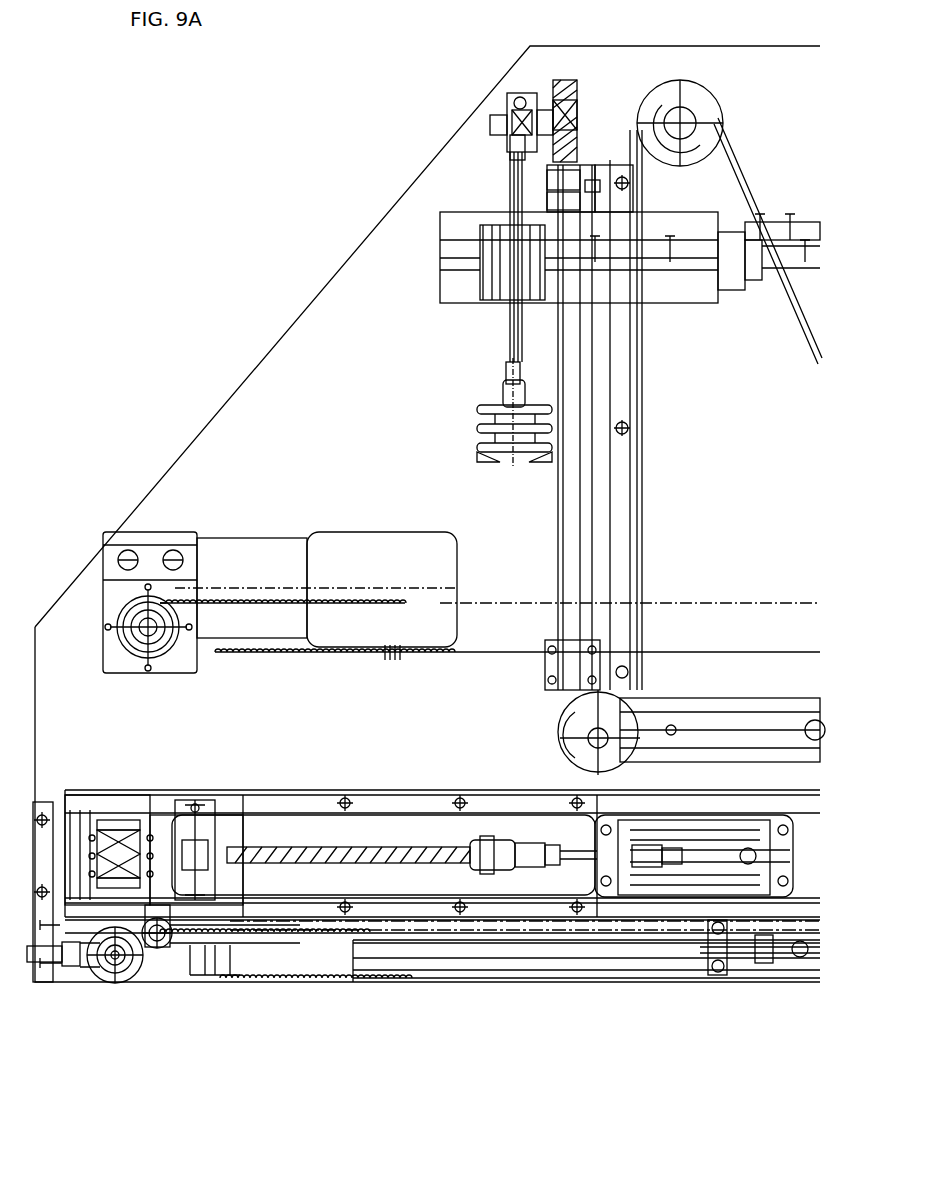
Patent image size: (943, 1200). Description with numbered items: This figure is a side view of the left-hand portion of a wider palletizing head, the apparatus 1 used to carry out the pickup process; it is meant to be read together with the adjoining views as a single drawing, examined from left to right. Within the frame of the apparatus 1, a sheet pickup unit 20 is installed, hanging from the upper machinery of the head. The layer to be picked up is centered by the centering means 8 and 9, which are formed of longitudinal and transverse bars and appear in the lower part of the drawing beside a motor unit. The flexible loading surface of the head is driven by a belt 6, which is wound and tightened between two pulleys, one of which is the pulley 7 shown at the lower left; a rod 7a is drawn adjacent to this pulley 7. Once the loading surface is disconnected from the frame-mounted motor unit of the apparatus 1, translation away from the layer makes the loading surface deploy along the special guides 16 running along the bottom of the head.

The apparatus 1 is at (296, 226).
The sheet pickup unit 20 is at (484, 386).
The centering means 8 is at (98, 790).
The centering means 9 is at (183, 842).
The pulley 7 is at (146, 985).
The pivot rod 7a is at (80, 965).
The belt 6 is at (300, 968).
The guides 16 is at (490, 935).